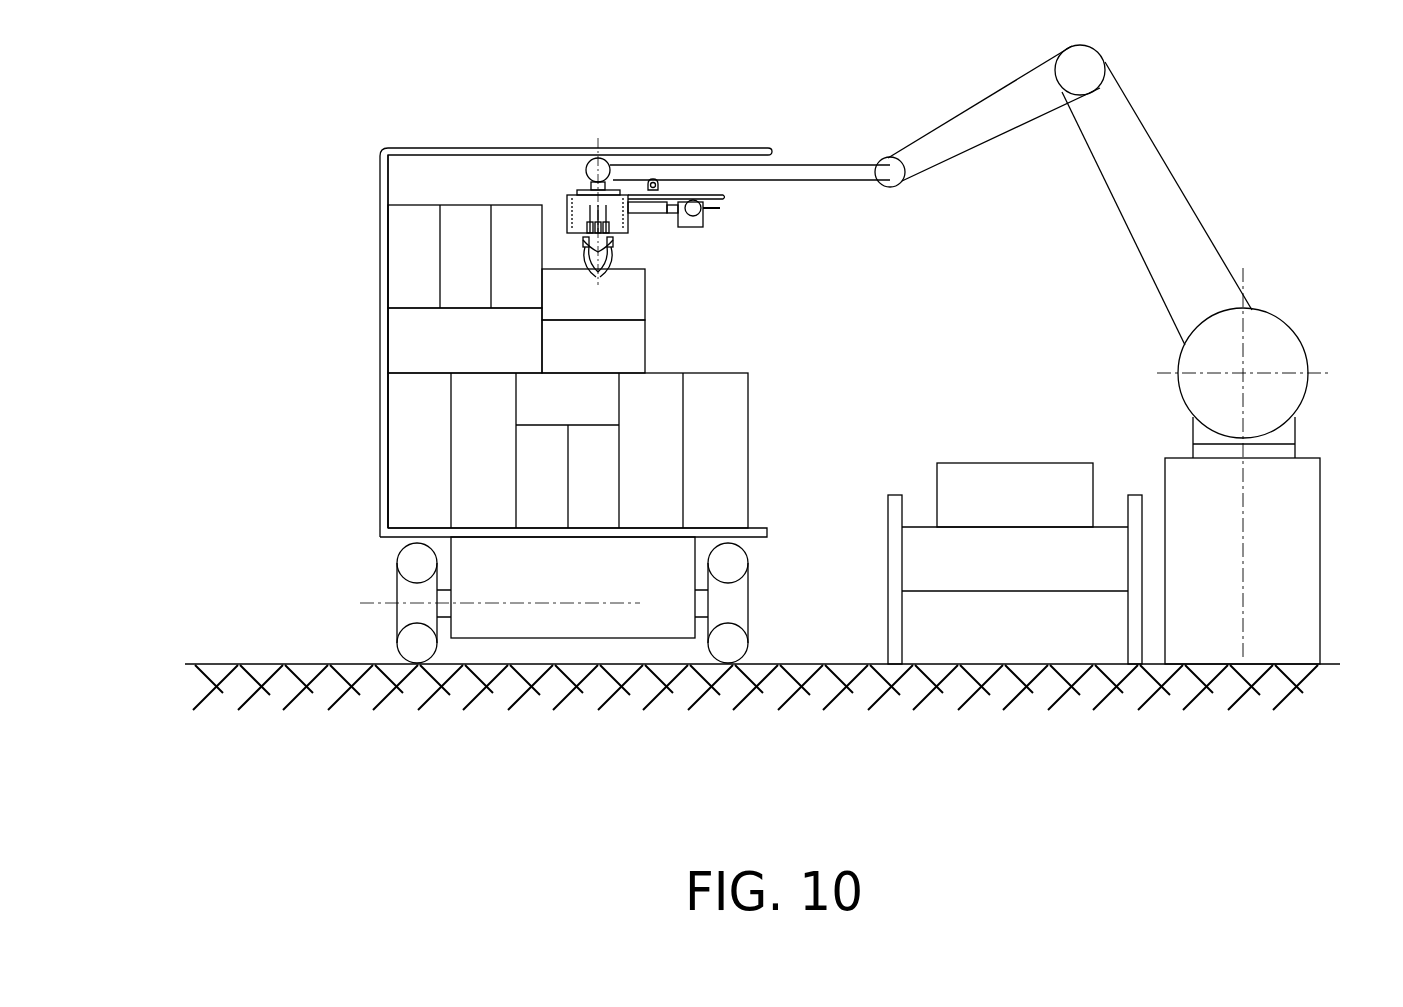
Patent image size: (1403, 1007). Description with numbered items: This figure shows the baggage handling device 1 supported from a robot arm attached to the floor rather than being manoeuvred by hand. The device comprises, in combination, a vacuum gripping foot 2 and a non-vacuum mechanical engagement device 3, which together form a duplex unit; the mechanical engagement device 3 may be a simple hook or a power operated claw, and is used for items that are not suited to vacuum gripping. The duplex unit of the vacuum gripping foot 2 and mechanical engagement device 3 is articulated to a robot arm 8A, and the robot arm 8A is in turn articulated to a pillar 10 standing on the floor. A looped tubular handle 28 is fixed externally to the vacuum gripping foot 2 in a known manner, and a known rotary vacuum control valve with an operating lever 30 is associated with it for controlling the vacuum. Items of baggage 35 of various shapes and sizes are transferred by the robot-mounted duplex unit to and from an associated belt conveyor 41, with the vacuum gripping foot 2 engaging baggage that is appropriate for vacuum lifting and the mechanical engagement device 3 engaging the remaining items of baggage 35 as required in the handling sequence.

The baggage handling device 1 is at (778, 158).
The vacuum gripping foot 2 is at (561, 201).
The mechanical engagement device 3 is at (621, 248).
The looped tubular handle 28 is at (736, 199).
The operating lever 30 is at (718, 216).
The robot arm 8A is at (951, 167).
The items of baggage 35 is at (640, 336).
The belt conveyor 41 is at (920, 520).
The pillar 10 is at (1309, 476).